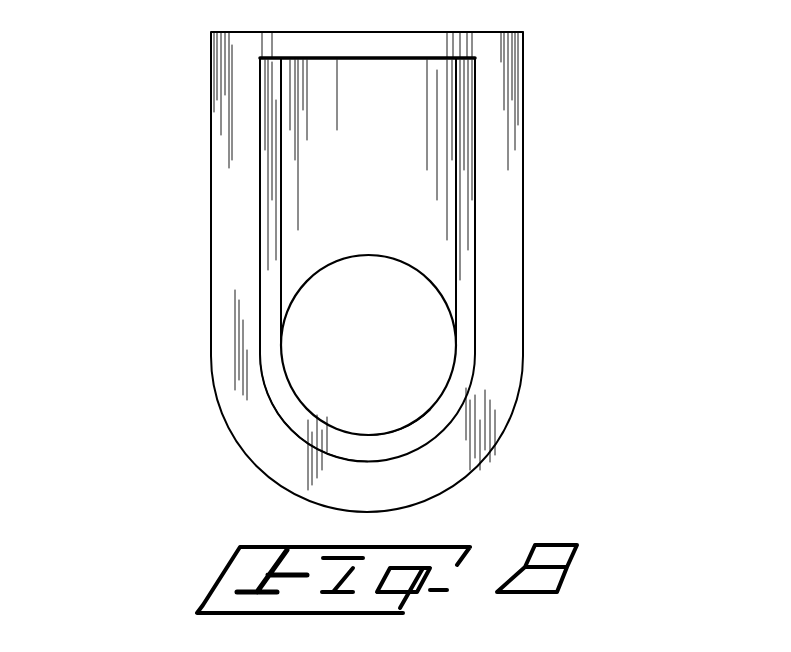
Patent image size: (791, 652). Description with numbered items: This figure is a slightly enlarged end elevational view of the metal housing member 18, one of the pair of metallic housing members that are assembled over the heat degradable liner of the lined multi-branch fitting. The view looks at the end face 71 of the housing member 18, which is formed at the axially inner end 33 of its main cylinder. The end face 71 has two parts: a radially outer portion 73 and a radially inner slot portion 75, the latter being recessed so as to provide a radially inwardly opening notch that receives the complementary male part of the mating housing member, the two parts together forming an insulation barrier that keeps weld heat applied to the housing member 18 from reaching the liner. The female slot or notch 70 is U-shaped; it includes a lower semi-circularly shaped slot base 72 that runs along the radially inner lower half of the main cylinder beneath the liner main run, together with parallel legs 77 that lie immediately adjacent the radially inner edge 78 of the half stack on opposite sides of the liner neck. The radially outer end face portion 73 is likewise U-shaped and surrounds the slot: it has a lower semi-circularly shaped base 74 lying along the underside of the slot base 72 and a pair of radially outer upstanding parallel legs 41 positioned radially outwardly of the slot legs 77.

The metal housing member 18 is at (170, 277).
The axially inner end of cylinder 30 33 is at (558, 355).
The radially outer upstanding parallel legs 41 is at (232, 118).
The female slot 70 is at (270, 72).
The end face 71 is at (507, 23).
The slot base 72 is at (413, 427).
The radially outer end face portion 73 is at (502, 176).
The lower semi-circularly shaped base 74 is at (265, 440).
The radially inner slot portion 75 is at (463, 70).
The parallel legs 77 is at (268, 178).
The radially inner edge of half stack 78 is at (455, 232).